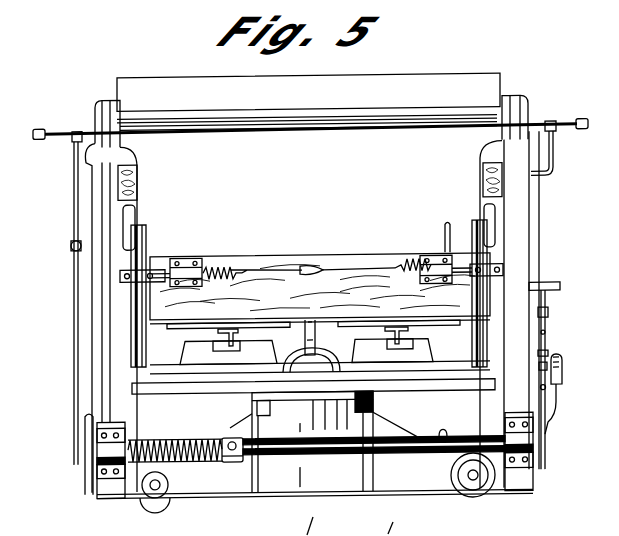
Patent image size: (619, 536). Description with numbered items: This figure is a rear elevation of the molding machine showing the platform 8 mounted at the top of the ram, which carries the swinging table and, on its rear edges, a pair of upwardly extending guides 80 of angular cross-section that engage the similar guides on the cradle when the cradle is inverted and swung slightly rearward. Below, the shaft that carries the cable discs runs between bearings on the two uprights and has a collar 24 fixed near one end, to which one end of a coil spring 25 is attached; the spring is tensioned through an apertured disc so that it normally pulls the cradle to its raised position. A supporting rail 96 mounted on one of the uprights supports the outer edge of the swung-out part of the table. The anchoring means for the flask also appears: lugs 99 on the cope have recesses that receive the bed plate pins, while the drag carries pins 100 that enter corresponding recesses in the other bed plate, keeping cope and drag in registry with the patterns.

The platform 8 is at (472, 382).
The collar 24 is at (233, 462).
The coil spring 25 is at (170, 442).
The guides 80 is at (147, 349).
The supporting rail 96 is at (502, 377).
The lugs 99 is at (413, 343).
The pins 100 is at (238, 334).